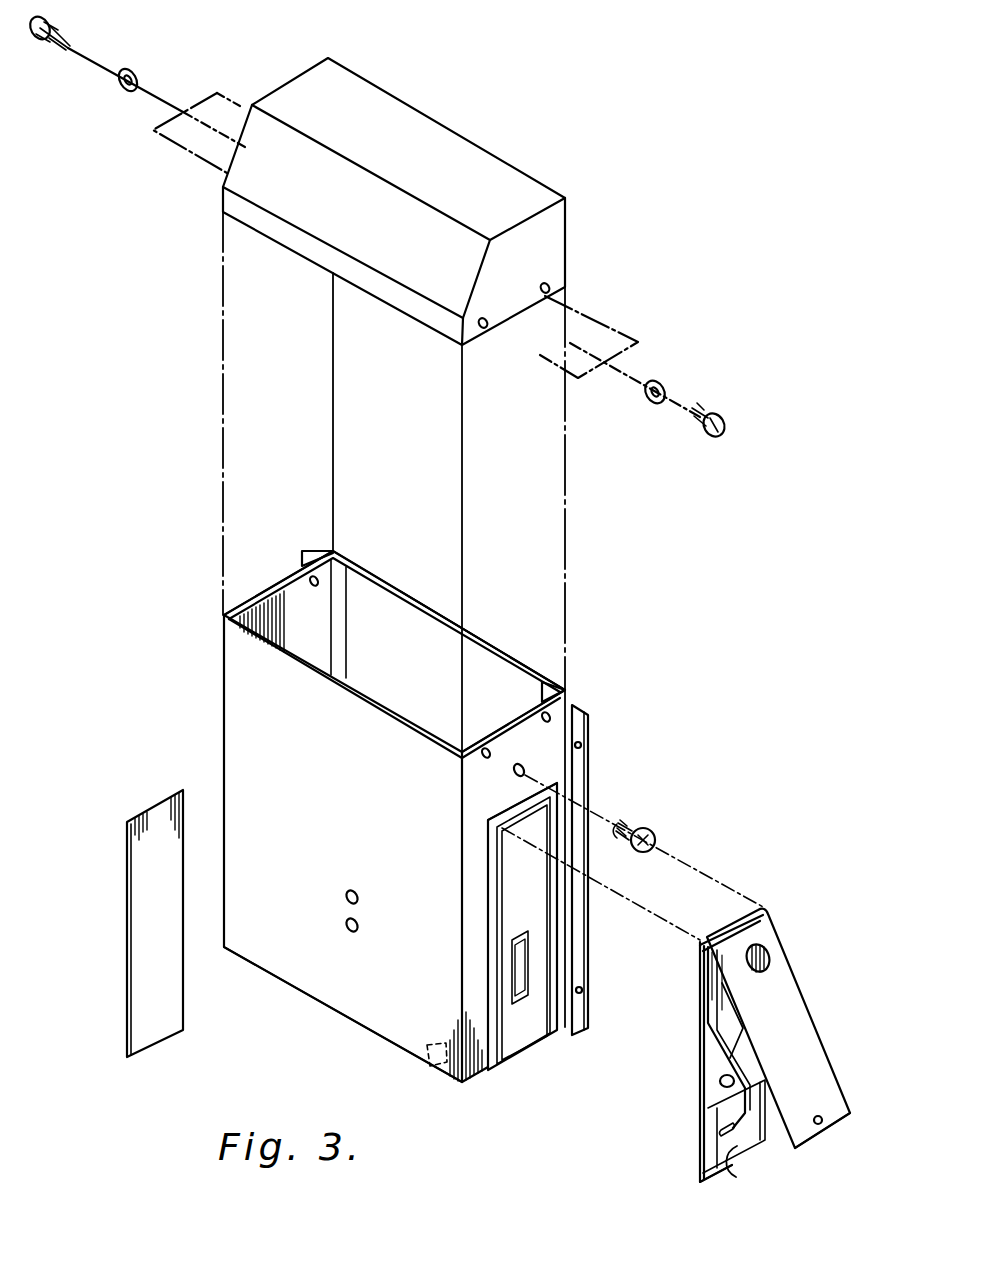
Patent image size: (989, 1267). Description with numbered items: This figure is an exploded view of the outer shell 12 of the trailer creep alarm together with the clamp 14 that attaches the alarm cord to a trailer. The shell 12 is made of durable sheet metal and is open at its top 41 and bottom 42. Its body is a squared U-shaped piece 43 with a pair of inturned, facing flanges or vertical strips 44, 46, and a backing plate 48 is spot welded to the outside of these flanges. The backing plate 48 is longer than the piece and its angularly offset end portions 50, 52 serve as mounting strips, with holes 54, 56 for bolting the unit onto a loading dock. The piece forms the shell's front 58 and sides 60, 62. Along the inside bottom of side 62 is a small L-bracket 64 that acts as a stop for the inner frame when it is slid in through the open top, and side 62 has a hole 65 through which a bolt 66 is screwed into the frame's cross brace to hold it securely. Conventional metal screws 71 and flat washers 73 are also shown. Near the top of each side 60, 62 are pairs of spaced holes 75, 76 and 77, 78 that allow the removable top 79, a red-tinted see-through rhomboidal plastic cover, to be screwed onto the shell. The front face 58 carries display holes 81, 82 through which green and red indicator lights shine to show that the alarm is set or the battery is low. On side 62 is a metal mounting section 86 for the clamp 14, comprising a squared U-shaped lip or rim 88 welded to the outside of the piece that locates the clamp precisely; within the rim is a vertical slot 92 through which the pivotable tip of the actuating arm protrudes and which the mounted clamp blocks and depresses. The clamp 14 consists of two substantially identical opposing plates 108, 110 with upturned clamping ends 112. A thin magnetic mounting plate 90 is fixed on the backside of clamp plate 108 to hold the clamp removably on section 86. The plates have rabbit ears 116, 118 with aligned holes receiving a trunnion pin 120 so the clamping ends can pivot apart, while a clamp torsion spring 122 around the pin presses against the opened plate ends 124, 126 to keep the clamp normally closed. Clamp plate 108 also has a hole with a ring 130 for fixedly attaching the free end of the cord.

The outer housing or boxlike shell 12 is at (208, 712).
The clamp 14 is at (779, 1061).
The top 41 is at (383, 618).
The bottom 42 is at (342, 1022).
The squared U-shaped piece 43 is at (266, 592).
The inturned flange or vertical strip 44 is at (338, 558).
The inturned flange or vertical strip 46 is at (550, 681).
The backing plate 48 is at (485, 641).
The end portion of backing plate 50 is at (310, 546).
The end portion of backing plate 52 is at (582, 710).
The hole 54 is at (585, 748).
The hole 56 is at (584, 990).
The front 58 is at (350, 823).
The side 60 is at (216, 594).
The side 62 is at (502, 742).
The L-bracket 64 is at (432, 1066).
The hole 65 is at (525, 768).
The bolt 66 is at (648, 826).
The standard metal screw 71 is at (62, 30).
The flat washer 73 is at (130, 66).
The hole 75 is at (258, 615).
The hole 76 is at (314, 586).
The hole 77 is at (486, 760).
The hole 78 is at (542, 724).
The removable top 79 is at (493, 167).
The upper display hole 81 is at (359, 891).
The lower display hole 82 is at (362, 925).
The mounting section 86 is at (526, 1034).
The squared U-shaped lip or rim 88 is at (494, 814).
The magnetic mounting plate 90 is at (170, 1030).
The vertical slot 92 is at (521, 946).
The clamp plate 108 is at (700, 1140).
The clamp plate 110 is at (792, 990).
The upturned clamping ends 112 is at (727, 917).
The rabbit ear 116 is at (710, 1053).
The rabbit ear 118 is at (748, 1064).
The trunnion pin 120 is at (720, 1082).
The clamp torsion spring 122 is at (742, 1128).
The opened plate end 124 is at (848, 1122).
The opened plate end 126 is at (708, 1182).
The ring 130 is at (738, 1179).